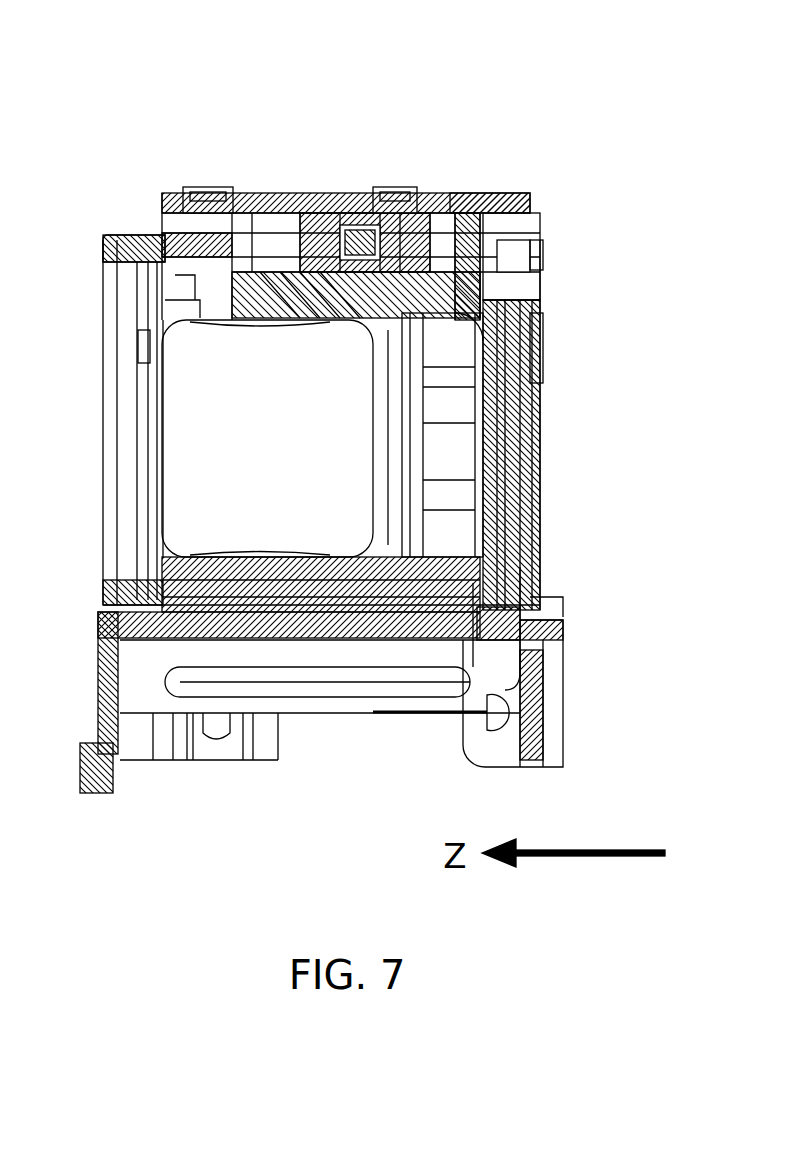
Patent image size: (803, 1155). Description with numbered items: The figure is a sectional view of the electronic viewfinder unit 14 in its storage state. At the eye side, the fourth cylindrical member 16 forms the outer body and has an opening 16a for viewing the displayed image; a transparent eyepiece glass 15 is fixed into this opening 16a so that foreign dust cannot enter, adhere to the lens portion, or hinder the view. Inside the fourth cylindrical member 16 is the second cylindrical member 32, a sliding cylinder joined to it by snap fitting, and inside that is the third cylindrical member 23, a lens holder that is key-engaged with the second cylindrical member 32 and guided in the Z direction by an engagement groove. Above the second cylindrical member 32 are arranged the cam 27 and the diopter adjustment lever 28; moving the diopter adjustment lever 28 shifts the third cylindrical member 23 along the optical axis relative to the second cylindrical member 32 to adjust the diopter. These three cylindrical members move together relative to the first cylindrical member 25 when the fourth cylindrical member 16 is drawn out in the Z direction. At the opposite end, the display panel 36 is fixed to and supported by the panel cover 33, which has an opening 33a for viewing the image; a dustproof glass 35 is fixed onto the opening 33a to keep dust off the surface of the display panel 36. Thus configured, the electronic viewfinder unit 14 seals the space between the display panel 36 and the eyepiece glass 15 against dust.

The electronic viewfinder unit 14 is at (626, 47).
The eyepiece glass 15 is at (120, 640).
The fourth cylindrical member 16 is at (112, 282).
The opening 16a is at (133, 300).
The third cylindrical member 23 is at (250, 300).
The first cylindrical member 25 is at (425, 210).
The cam 27 is at (228, 315).
The diopter adjustment lever 28 is at (322, 240).
The second cylindrical member 32 is at (392, 200).
The panel cover 33 is at (480, 215).
The opening 33a is at (457, 320).
The dustproof glass 35 is at (388, 712).
The display panel 36 is at (512, 215).